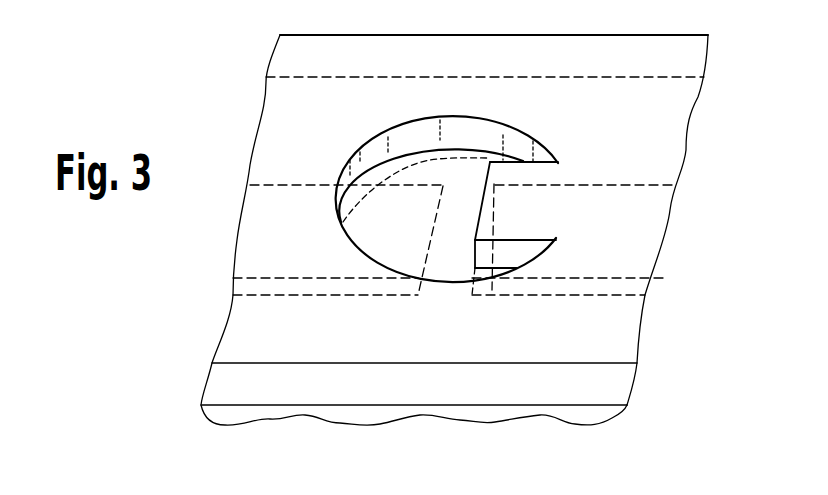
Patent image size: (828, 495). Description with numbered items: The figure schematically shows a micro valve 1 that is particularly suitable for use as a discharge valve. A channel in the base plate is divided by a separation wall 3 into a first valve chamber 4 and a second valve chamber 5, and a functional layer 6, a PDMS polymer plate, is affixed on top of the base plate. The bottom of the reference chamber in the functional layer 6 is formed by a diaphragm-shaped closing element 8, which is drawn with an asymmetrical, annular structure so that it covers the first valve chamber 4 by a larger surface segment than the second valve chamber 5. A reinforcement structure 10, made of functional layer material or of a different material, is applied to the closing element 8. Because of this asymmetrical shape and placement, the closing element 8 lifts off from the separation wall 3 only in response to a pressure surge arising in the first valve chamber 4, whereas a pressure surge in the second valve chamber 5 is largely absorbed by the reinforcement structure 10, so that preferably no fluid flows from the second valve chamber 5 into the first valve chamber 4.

The micro valve 1 is at (200, 29).
The separation wall 3 is at (452, 258).
The first valve chamber 4 is at (258, 251).
The second valve chamber 5 is at (637, 251).
The functional layer 6 is at (547, 385).
The diaphragm-shaped closing element 8 is at (460, 173).
The reinforcement structure 10 is at (520, 213).